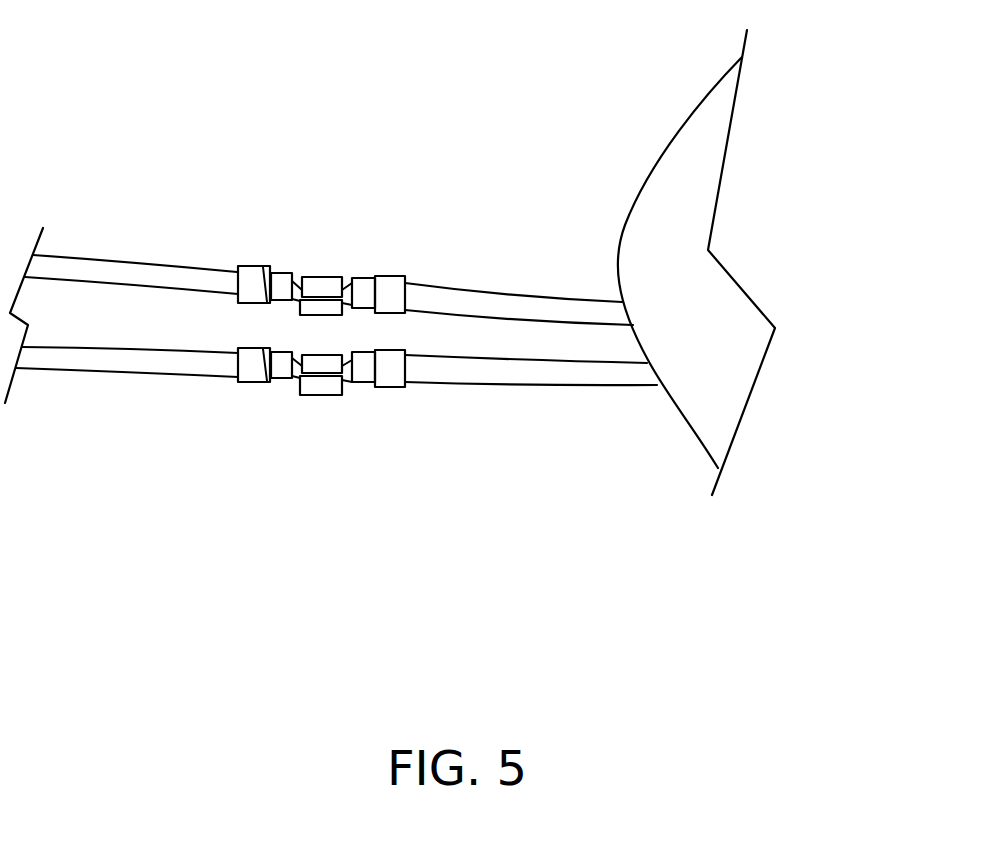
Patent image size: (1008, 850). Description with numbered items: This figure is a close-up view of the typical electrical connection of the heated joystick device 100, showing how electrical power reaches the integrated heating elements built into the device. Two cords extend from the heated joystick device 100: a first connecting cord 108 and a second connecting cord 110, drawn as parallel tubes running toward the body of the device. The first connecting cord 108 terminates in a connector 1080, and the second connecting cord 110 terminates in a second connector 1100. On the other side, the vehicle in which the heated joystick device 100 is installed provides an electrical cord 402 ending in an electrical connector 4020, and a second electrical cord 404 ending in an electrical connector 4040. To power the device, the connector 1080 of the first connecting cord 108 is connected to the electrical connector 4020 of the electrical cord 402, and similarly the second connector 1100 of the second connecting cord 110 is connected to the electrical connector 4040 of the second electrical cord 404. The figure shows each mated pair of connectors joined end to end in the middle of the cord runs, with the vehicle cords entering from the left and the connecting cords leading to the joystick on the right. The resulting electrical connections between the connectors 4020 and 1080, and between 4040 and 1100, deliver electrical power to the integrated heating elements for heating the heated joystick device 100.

The heated joystick device 100 is at (703, 207).
The first connecting cord 108 is at (461, 307).
The second connecting cord 110 is at (465, 377).
The electrical cord 402 is at (117, 277).
The second electrical cord 404 is at (113, 360).
The electrical connector 4020 is at (257, 297).
The electrical connector 4040 is at (262, 365).
The connector 1080 is at (330, 295).
The second connector 1100 is at (335, 368).